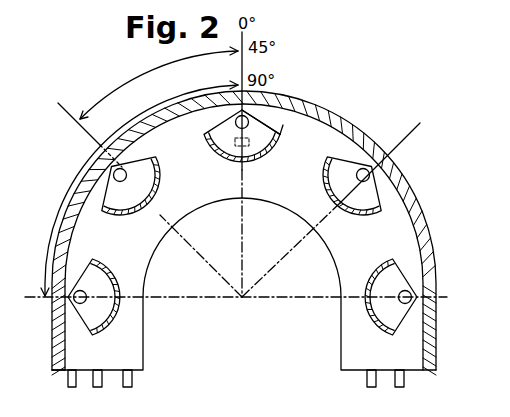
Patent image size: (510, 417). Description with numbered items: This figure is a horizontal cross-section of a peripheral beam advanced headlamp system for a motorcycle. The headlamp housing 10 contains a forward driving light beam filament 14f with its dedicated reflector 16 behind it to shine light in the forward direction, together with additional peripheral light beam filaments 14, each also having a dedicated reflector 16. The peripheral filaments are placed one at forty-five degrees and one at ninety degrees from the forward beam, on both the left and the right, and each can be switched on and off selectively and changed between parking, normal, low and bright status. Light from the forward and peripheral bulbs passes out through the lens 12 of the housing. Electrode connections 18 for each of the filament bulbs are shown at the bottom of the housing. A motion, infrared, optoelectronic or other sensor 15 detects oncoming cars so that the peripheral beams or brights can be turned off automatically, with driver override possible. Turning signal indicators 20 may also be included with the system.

The headlamp housing 10 is at (300, 194).
The lens 12 is at (330, 110).
The peripheral light beam filament 14 is at (358, 152).
The forward driving light beam filament 14f is at (272, 100).
The sensor 15 is at (284, 124).
The reflector 16 is at (385, 198).
The electrode connections 18 is at (74, 387).
The turning signal indicators 20 is at (32, 364).